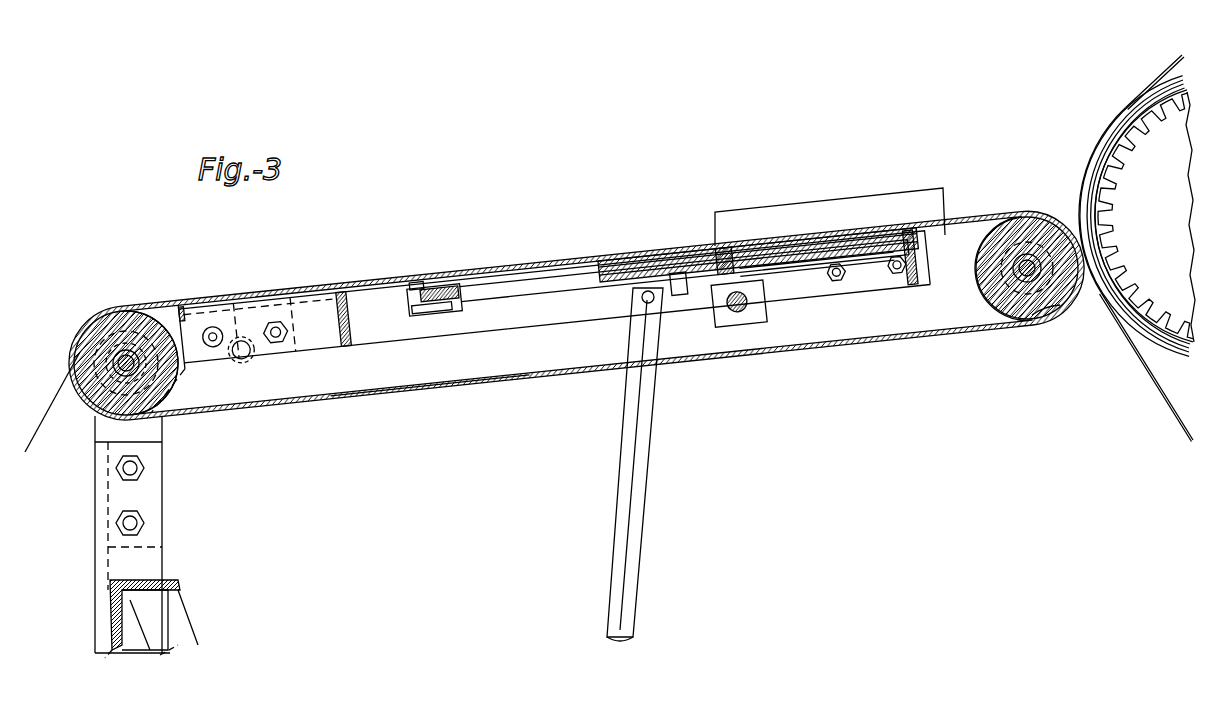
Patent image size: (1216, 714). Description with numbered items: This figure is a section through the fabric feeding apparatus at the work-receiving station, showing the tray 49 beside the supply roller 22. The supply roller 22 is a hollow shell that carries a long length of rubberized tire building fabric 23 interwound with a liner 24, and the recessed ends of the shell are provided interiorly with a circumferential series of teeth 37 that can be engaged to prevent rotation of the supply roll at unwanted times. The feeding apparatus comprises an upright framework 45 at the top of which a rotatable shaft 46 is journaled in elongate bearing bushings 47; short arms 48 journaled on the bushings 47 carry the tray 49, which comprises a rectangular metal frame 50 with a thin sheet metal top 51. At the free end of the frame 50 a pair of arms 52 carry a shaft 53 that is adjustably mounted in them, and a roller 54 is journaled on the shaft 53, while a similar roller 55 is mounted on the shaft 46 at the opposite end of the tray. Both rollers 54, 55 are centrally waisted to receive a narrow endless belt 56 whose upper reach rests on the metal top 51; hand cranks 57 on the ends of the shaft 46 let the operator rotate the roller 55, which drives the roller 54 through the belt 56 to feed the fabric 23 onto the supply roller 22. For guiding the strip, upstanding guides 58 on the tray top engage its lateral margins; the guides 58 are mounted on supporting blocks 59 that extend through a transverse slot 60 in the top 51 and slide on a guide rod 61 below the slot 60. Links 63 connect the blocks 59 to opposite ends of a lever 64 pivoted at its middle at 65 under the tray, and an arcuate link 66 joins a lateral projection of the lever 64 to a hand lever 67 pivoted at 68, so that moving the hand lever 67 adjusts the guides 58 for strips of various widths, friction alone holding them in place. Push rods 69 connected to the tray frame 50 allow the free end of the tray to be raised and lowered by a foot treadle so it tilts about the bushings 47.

The supply roller 22 is at (1132, 167).
The tire building fabric 23 is at (186, 301).
The liner 24 is at (1176, 72).
The teeth 37 is at (1130, 236).
The framework 45 is at (100, 534).
The shaft 46 is at (92, 396).
The bearing bushings 47 is at (97, 420).
The short arms 48 is at (214, 366).
The tray 49 is at (616, 276).
The metal frame 50 is at (500, 323).
The sheet metal top 51 is at (358, 290).
The arms 52 is at (932, 290).
The shaft 53 is at (1022, 282).
The roller 54 is at (1045, 318).
The roller 55 is at (160, 392).
The endless belt 56 is at (386, 402).
The hand cranks 57 is at (206, 382).
The guides 58 is at (882, 206).
The supporting blocks 59 is at (726, 300).
The slot 60 is at (732, 257).
The guide rod 61 is at (748, 310).
The links 63 is at (868, 286).
The lever 64 is at (695, 282).
The pivot 65 is at (770, 300).
The arcuate link 66 is at (545, 292).
The hand lever 67 is at (466, 292).
The pivot 68 is at (437, 286).
The push rods 69 is at (648, 550).